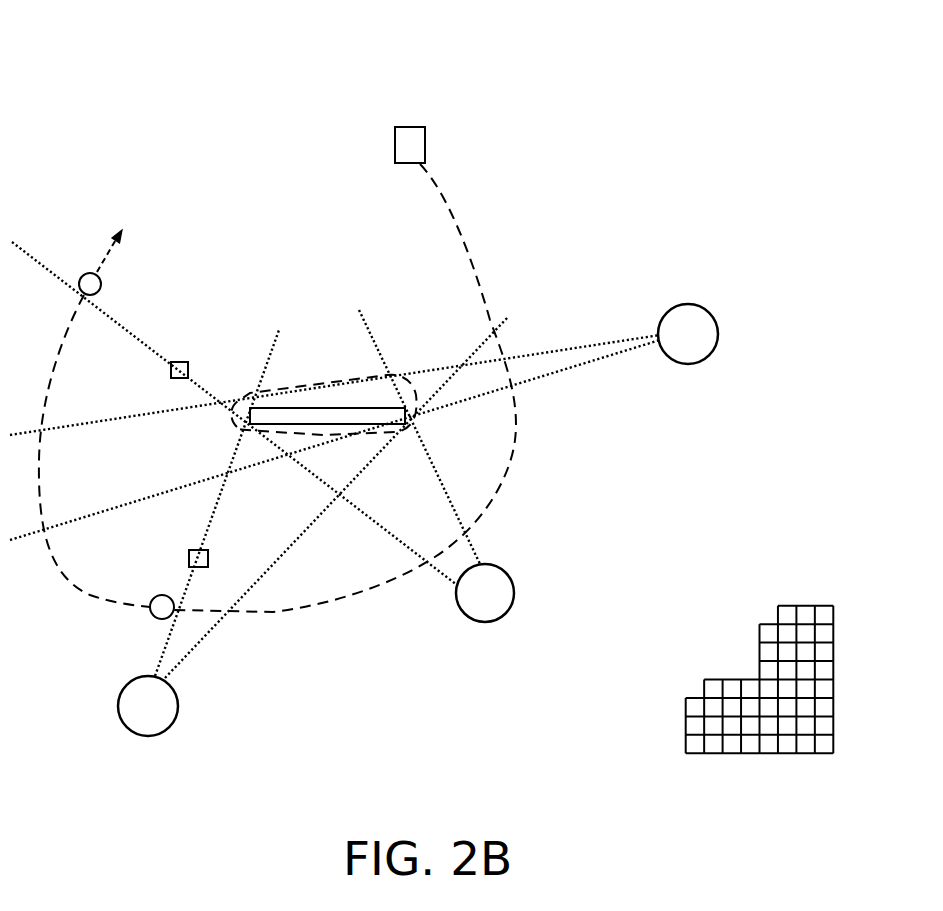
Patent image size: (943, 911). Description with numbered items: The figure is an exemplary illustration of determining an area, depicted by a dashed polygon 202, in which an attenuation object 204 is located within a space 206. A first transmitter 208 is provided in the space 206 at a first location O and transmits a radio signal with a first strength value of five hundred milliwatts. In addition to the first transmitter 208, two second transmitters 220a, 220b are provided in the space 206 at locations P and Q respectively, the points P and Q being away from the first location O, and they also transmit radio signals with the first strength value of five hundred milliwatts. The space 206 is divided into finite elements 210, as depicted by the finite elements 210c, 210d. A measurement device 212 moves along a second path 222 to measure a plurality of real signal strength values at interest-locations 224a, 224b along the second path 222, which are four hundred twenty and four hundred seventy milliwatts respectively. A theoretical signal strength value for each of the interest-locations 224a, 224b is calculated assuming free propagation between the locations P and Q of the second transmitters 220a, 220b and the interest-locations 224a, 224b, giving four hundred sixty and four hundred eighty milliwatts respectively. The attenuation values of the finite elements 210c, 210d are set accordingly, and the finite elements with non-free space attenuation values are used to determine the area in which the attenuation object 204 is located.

The space 206 is at (662, 73).
The measurement device 212 is at (425, 137).
The second path 222 is at (455, 207).
The interest-location 224b is at (85, 272).
The finite element 210d is at (181, 362).
The second transmitter 220b is at (703, 308).
The second transmitter 220a is at (515, 595).
The first transmitter 208 is at (120, 713).
The interest-location 224a is at (151, 618).
The finite element 210c is at (190, 553).
The attenuation object 204 is at (287, 424).
The dashed polygon 202 is at (373, 435).
The finite elements 210 is at (685, 734).